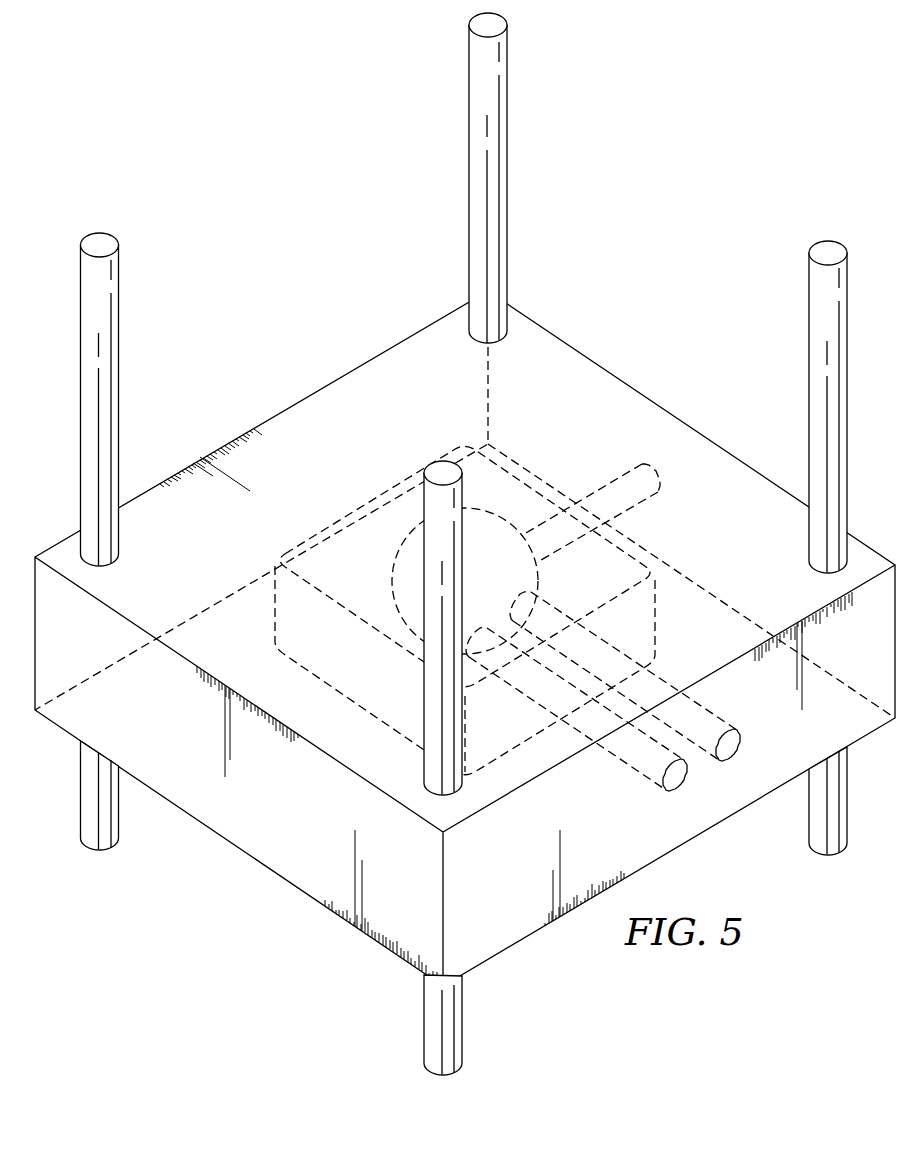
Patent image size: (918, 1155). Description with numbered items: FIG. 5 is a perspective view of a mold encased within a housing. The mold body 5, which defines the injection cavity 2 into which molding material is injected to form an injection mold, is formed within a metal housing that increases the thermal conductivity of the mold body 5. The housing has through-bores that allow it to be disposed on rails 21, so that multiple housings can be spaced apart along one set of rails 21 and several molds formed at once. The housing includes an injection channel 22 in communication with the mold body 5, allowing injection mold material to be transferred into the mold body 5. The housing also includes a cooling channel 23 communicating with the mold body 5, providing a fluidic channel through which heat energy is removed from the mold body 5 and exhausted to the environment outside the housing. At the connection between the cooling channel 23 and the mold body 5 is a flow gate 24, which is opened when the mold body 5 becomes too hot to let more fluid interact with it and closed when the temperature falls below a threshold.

The injection cavity 2 is at (396, 573).
The mold body 5 is at (365, 679).
The rails 21 is at (434, 517).
The injection channel 22 is at (655, 468).
The cooling channel 23 is at (682, 783).
The flow gate 24 is at (538, 682).